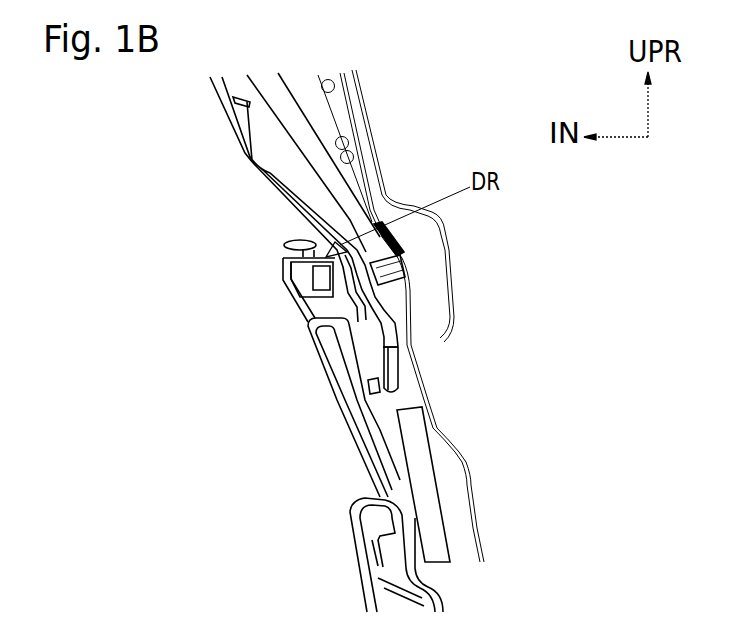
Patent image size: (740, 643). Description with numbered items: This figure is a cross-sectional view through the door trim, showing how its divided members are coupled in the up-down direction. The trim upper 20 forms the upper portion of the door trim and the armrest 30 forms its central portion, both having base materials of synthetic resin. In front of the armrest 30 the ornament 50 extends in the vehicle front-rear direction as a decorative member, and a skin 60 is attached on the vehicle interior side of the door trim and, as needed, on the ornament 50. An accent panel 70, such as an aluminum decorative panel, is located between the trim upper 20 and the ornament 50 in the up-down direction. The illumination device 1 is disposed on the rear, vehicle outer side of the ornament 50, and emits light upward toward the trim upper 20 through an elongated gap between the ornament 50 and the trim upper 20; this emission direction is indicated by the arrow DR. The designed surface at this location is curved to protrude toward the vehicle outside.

The illumination device 1 is at (340, 263).
The trim upper 20 is at (247, 138).
The armrest 30 is at (368, 580).
The ornament 50 is at (365, 427).
The skin 60 is at (357, 525).
The accent panel 70 is at (283, 285).